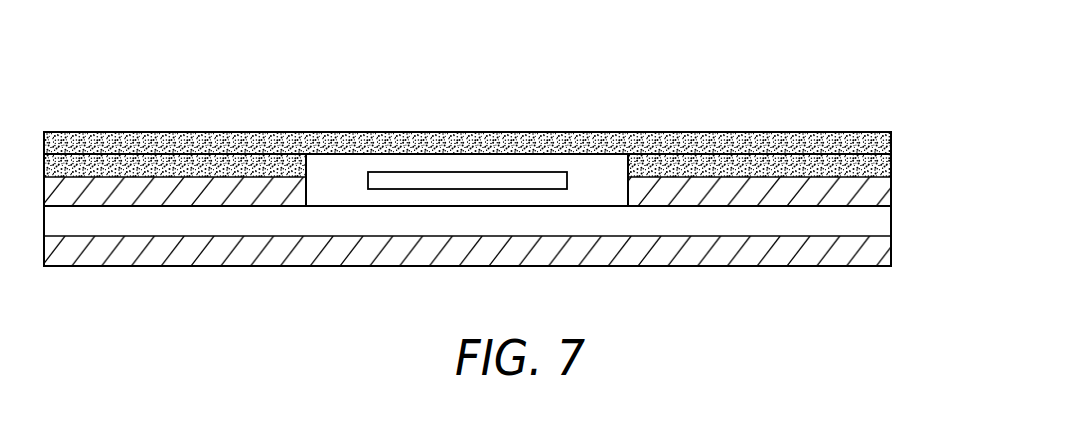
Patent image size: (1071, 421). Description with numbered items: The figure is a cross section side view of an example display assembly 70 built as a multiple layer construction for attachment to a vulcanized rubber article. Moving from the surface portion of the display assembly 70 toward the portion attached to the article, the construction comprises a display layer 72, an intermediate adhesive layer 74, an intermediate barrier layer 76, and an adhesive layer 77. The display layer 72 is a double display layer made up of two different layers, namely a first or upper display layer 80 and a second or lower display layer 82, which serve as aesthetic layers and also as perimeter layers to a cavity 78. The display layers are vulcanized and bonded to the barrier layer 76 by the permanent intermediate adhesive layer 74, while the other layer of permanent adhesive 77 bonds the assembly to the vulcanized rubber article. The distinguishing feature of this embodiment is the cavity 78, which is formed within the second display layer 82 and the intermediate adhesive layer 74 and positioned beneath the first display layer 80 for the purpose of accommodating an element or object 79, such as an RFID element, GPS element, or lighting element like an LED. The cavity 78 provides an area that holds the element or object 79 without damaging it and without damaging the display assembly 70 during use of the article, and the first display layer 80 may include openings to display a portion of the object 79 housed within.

The display assembly 70 is at (798, 104).
The display layer 72 is at (898, 132).
The intermediate adhesive layer 74 is at (720, 192).
The intermediate barrier layer 76 is at (215, 191).
The adhesive layer 77 is at (747, 252).
The cavity 78 is at (336, 179).
The element or object 79 is at (388, 180).
The first display layer 80 is at (675, 143).
The second display layer 82 is at (703, 165).